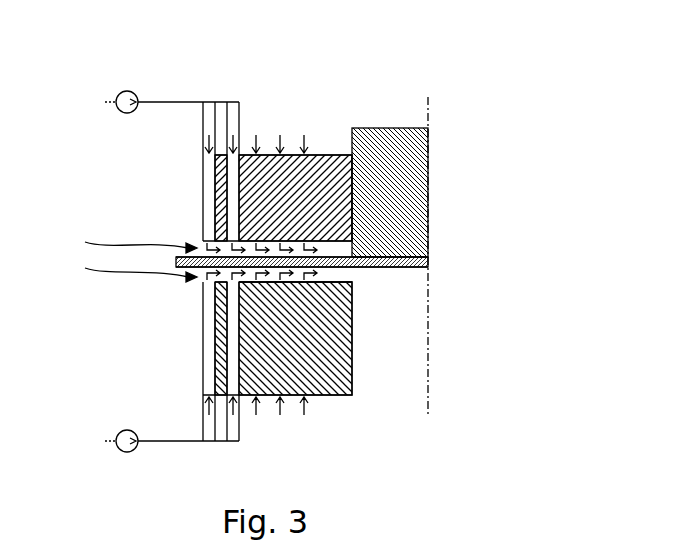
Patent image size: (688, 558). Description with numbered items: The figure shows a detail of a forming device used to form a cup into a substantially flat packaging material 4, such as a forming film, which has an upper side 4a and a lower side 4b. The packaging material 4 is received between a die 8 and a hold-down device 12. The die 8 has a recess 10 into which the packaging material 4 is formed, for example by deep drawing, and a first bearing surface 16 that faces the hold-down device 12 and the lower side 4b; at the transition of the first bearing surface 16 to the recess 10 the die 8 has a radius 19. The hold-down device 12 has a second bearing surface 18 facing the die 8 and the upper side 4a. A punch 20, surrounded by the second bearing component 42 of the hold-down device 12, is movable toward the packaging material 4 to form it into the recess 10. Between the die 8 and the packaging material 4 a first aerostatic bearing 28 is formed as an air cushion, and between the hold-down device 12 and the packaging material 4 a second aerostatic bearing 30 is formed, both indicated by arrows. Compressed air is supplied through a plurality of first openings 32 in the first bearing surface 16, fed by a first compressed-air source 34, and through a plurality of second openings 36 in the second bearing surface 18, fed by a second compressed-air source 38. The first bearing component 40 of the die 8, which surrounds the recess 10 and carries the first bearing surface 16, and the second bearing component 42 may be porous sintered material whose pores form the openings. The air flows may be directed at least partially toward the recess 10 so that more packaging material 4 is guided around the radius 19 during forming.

The packaging material 4 is at (428, 260).
The upper side 4a is at (413, 255).
The lower side 4b is at (403, 268).
The die 8 is at (333, 383).
The recess 10 is at (398, 370).
The hold-down device 12 is at (320, 155).
The first bearing surface 16 is at (345, 287).
The second bearing surface 18 is at (327, 248).
The radius 19 is at (320, 273).
The punch 20 is at (383, 150).
The first aerostatic bearing 28 is at (124, 269).
The second aerostatic bearing 30 is at (124, 239).
The first openings 32 is at (235, 287).
The first fluid or compressed-air source 34 is at (118, 449).
The second openings 36 is at (212, 237).
The second fluid or compressed-air source 38 is at (133, 92).
The first bearing component 40 is at (353, 370).
The second bearing component 42 is at (332, 185).